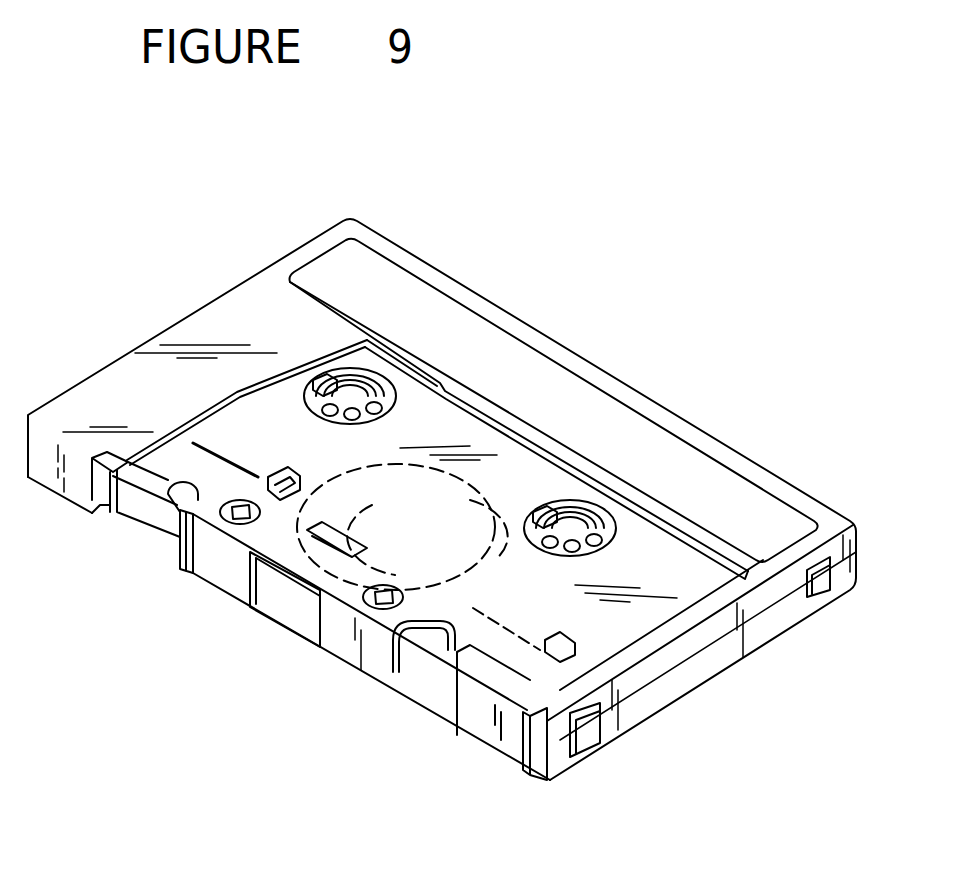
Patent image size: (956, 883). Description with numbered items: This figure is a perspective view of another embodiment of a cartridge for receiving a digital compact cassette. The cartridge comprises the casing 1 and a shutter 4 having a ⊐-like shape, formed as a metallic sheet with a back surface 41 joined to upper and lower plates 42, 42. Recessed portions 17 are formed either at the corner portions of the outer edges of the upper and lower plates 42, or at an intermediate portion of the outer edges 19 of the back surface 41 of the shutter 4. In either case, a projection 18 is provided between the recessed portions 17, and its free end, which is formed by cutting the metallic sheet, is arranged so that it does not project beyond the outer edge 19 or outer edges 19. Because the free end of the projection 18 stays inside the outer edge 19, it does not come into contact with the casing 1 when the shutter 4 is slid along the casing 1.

The casing 1 is at (213, 315).
The shutter 4 is at (553, 441).
The recessed portions 17 is at (527, 712).
The projection 18 is at (180, 545).
The outer edges 19 is at (278, 457).
The back surface 41 is at (350, 642).
The upper and lower plates 42 is at (680, 553).